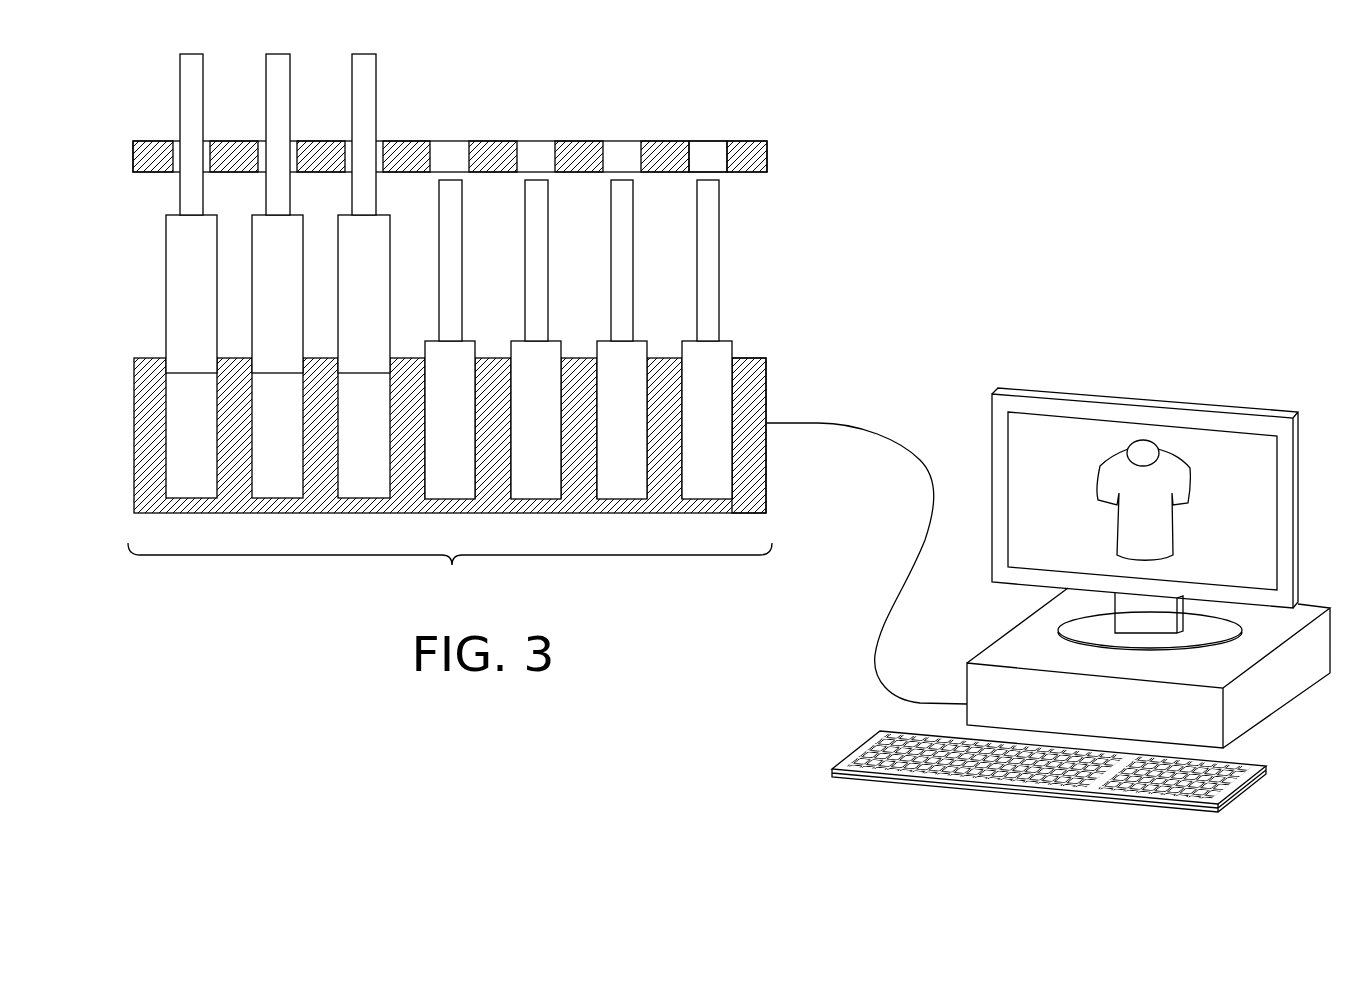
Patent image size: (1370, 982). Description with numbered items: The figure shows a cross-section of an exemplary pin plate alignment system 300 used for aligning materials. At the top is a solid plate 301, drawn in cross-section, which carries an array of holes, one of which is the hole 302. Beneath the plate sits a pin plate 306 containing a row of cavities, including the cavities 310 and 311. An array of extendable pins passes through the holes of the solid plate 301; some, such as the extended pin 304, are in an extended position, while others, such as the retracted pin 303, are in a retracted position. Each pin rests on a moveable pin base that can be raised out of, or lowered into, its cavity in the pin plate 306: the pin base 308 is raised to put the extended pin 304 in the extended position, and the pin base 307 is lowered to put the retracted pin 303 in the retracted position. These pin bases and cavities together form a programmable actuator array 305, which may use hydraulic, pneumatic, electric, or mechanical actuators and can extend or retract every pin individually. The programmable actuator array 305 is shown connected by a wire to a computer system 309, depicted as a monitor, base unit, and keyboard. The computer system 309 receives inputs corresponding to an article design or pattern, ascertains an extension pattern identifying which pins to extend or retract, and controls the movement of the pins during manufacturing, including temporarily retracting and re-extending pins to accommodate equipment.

The pin plate alignment system 300 is at (1110, 130).
The solid plate 301 is at (767, 158).
The hole 302 is at (698, 150).
The retracted pin 303 is at (712, 262).
The extended pin 304 is at (368, 111).
The programmable actuator array 305 is at (450, 567).
The pin plate 306 is at (753, 378).
The pin base 307 is at (723, 347).
The pin base 308 is at (368, 253).
The computer system 309 is at (1038, 408).
The cavity 310 is at (735, 485).
The cavity 311 is at (363, 460).